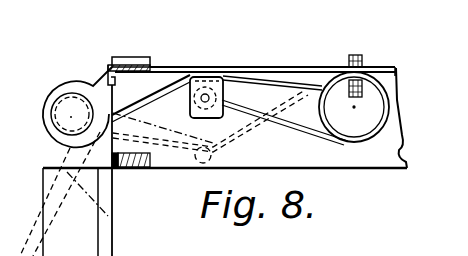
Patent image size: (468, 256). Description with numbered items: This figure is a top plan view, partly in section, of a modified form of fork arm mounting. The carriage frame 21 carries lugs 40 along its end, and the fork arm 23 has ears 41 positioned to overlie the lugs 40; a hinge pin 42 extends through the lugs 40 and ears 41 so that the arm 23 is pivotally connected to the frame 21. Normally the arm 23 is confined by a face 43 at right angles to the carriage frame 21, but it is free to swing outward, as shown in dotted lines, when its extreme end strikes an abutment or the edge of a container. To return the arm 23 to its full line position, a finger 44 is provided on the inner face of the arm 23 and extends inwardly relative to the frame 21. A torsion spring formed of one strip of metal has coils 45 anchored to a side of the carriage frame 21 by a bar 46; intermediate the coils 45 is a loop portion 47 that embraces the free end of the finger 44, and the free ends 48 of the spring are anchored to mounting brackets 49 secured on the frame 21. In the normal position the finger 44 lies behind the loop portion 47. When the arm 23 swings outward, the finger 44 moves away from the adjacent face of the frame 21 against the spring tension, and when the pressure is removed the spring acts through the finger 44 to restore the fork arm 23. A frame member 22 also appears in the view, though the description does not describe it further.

The carriage frame 21 is at (325, 72).
The frame member 22 is at (446, 8).
The fork arm 23 is at (103, 242).
The lugs 40 is at (101, 77).
The ears 41 is at (52, 155).
The hinge pin 42 is at (72, 100).
The face 43 is at (121, 166).
The finger 44 is at (167, 92).
The coils 45 is at (376, 152).
The bar 46 is at (365, 75).
The loop portion 47 is at (290, 80).
The free ends of the spring 48 is at (312, 125).
The mounting brackets 49 is at (222, 76).